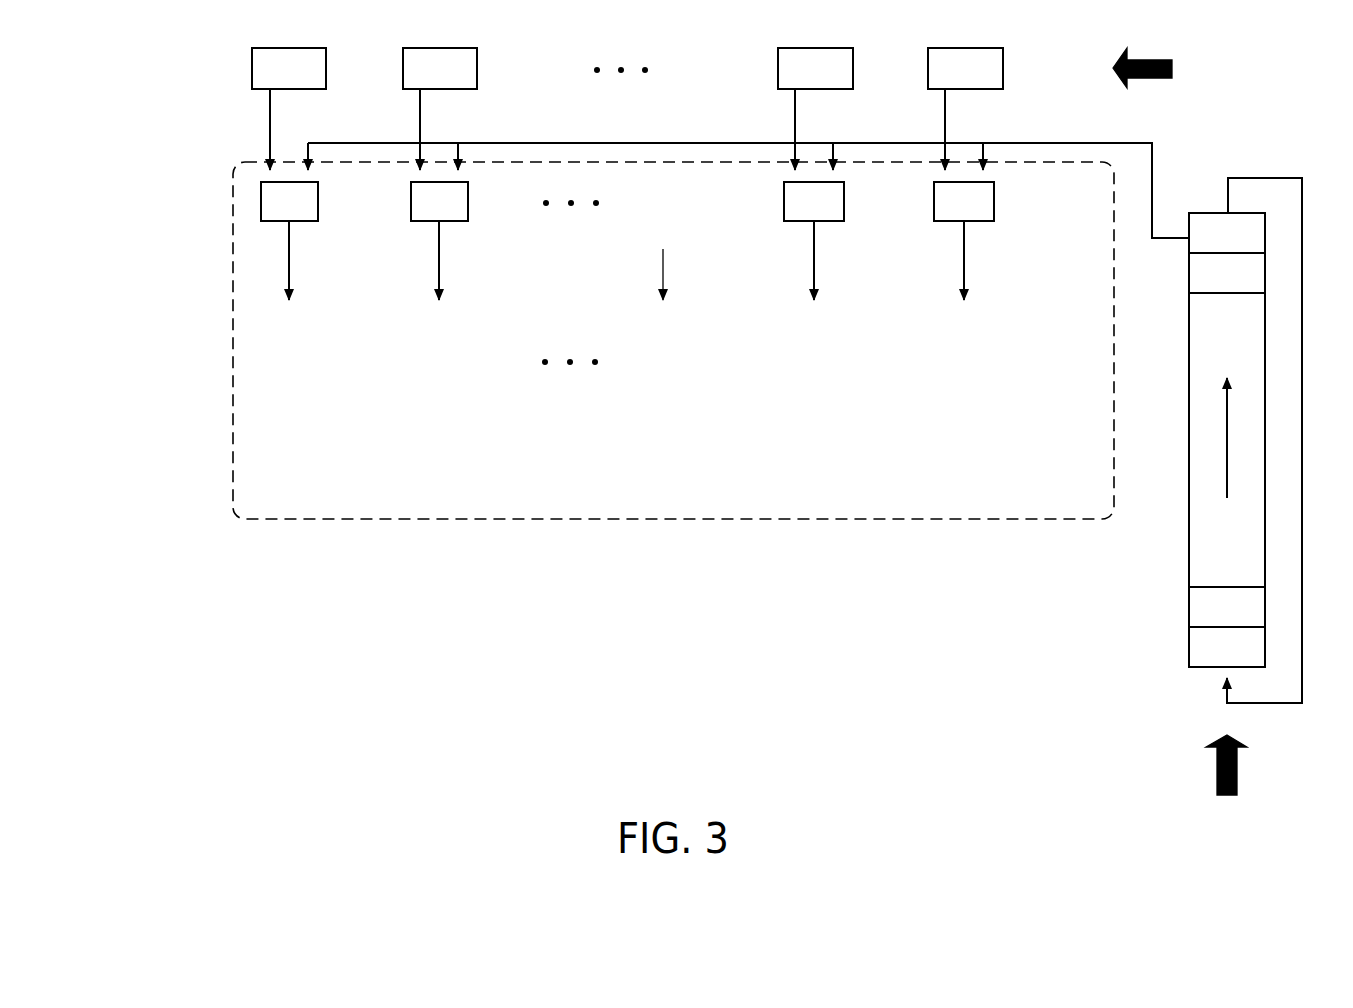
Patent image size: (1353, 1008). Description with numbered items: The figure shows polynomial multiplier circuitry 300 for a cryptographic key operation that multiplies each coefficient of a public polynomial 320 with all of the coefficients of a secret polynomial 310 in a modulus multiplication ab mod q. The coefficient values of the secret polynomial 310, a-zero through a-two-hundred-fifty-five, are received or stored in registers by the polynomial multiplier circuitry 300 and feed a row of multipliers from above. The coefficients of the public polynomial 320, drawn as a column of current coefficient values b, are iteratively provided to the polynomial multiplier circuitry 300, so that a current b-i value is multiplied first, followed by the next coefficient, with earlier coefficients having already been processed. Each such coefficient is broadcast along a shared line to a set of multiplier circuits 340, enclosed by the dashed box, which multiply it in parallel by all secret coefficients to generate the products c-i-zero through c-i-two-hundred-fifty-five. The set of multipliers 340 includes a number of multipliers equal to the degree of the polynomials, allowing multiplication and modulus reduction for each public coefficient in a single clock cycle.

The polynomial multiplier circuitry 300 is at (175, 83).
The secret polynomial 310 is at (1206, 70).
The public polynomial 320 is at (1237, 539).
The set of multiplier circuits 340 is at (250, 200).